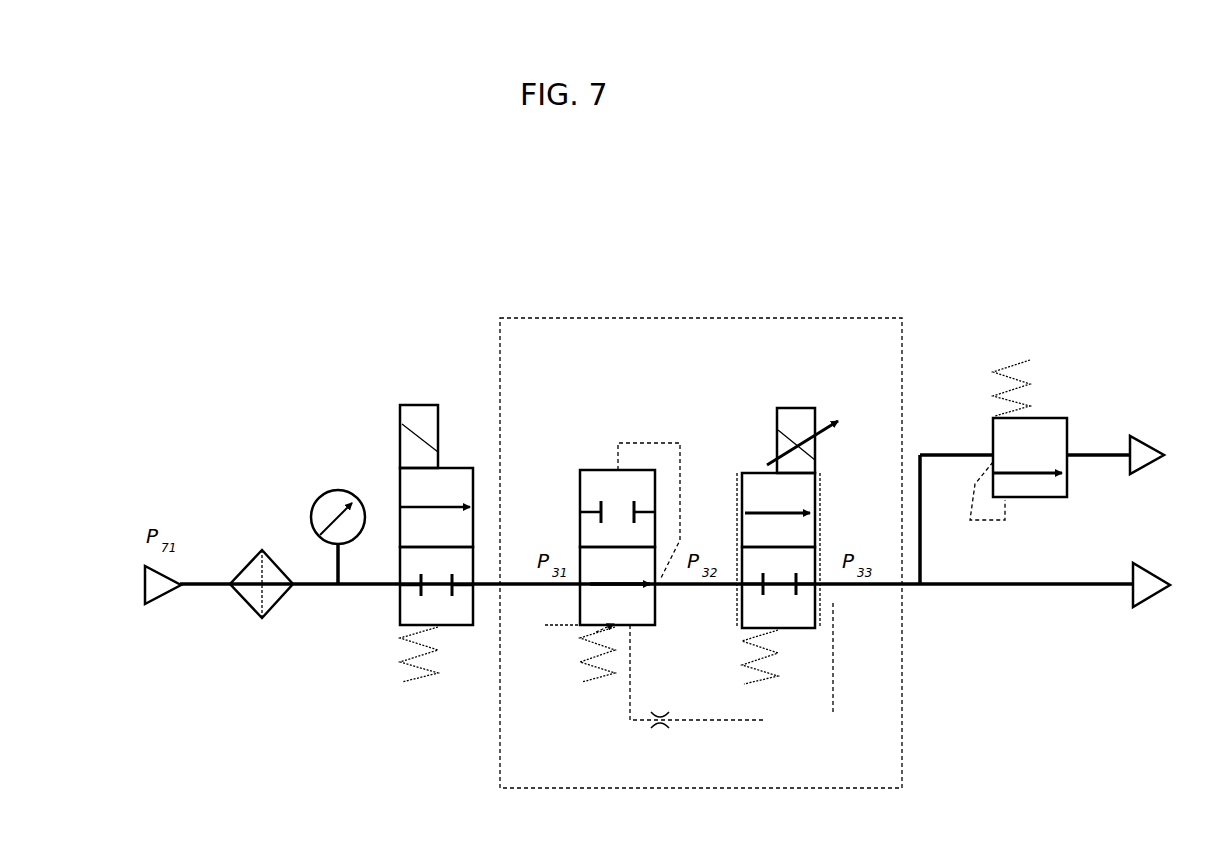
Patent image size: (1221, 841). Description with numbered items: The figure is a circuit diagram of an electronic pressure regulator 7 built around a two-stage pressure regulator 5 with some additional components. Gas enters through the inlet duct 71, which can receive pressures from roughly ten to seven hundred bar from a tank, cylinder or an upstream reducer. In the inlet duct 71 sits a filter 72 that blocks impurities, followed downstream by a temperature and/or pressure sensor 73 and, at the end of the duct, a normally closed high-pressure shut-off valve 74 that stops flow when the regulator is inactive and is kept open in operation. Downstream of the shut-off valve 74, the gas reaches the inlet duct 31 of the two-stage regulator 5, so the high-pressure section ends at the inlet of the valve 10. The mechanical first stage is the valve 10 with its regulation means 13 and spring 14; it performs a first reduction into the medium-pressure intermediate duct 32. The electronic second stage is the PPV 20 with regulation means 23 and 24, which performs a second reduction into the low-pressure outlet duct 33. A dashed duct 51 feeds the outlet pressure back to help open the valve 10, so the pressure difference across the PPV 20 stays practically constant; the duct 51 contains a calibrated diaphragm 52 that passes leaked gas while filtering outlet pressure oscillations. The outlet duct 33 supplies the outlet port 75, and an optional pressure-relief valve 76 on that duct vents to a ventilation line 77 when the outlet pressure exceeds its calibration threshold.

The two-stage pressure regulator 5 is at (812, 317).
The electronic pressure regulator 7 is at (955, 222).
The valve 10 is at (580, 470).
The regulation means 13 is at (661, 440).
The spring 14 is at (588, 684).
The PPV 20 is at (756, 470).
The regulation means 23 is at (800, 408).
The regulation means 24 is at (770, 683).
The inlet duct 31 is at (566, 592).
The intermediate duct 32 is at (681, 590).
The outlet duct 33 is at (846, 590).
The duct 51 is at (760, 727).
The calibrated diaphragm 52 is at (660, 727).
The inlet duct 71 is at (190, 590).
The filter 72 is at (272, 613).
The temperature and/or pressure sensor 73 is at (330, 490).
The high-pressure shut-off valve 74 is at (410, 388).
The outlet port 75 is at (1160, 603).
The pressure-relief valve 76 is at (1060, 412).
The ventilation line 77 is at (1150, 437).